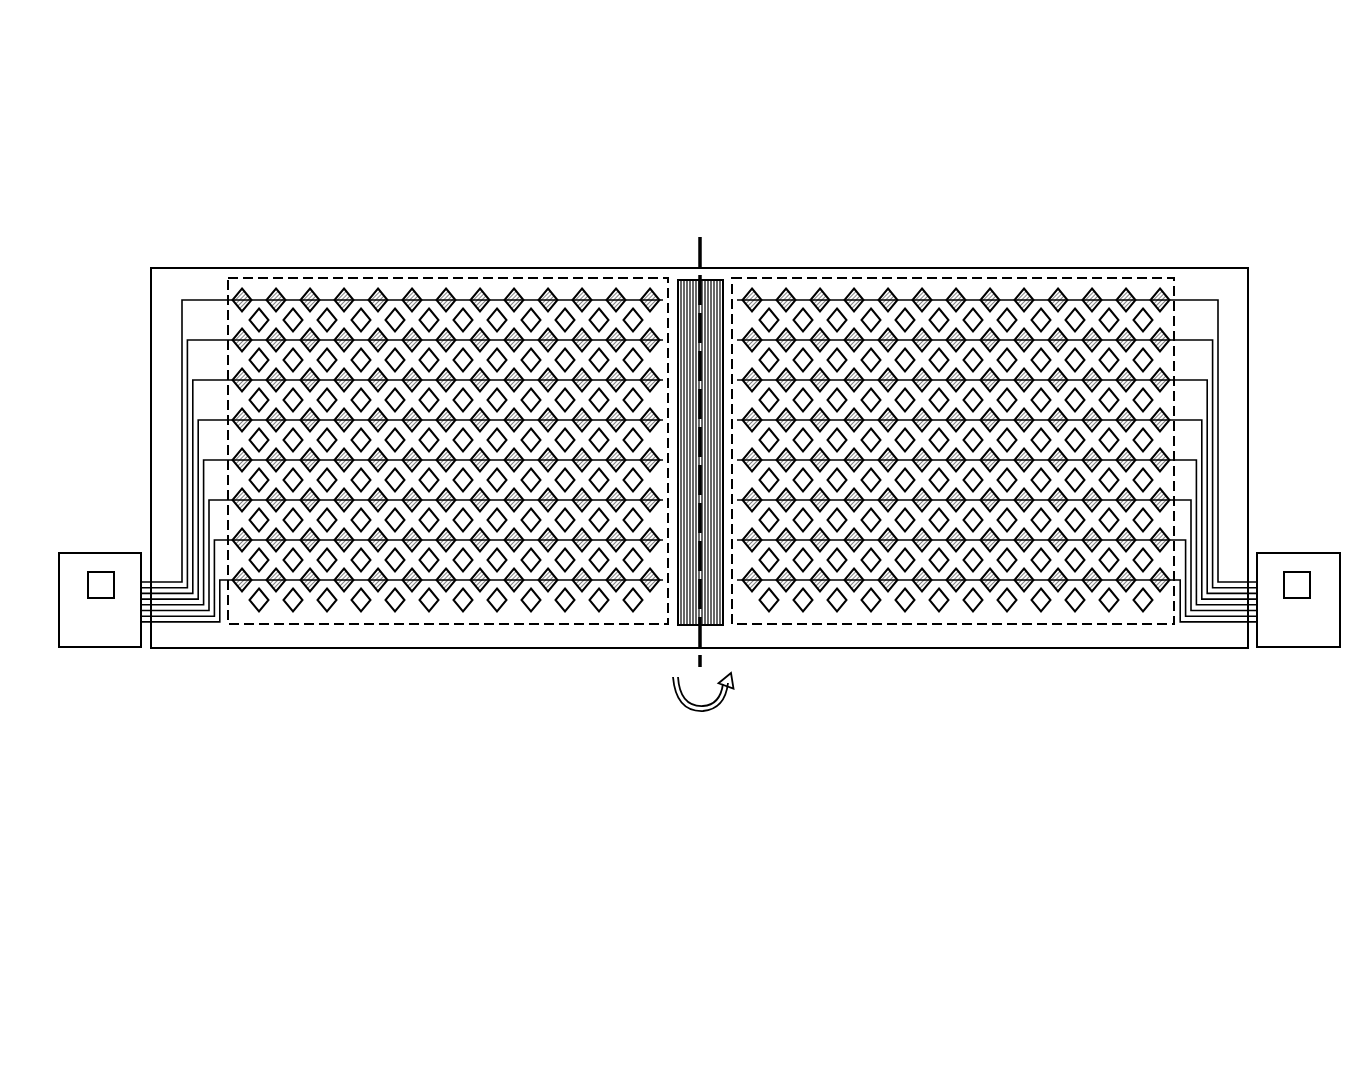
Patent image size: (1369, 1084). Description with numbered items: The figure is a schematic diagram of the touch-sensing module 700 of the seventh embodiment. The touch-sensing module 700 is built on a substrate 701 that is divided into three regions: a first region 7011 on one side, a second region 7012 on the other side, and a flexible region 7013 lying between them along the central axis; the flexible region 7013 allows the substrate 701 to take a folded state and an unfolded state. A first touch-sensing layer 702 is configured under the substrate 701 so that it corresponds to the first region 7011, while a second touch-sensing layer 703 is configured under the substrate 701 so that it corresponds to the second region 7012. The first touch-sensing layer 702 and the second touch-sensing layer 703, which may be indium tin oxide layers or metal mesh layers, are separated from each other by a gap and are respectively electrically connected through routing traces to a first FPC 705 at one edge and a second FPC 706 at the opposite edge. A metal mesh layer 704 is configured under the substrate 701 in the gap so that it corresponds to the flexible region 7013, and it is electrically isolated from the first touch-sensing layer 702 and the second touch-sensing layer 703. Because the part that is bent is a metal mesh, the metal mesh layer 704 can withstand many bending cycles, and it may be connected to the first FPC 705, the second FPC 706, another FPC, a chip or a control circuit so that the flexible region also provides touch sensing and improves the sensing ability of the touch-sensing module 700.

The touch-sensing module 700 is at (964, 743).
The substrate 701 is at (200, 282).
The first region 7011 is at (662, 255).
The second region 7012 is at (1173, 255).
The flexible region 7013 is at (721, 227).
The first touch-sensing layer 702 is at (447, 625).
The second touch-sensing layer 703 is at (1018, 625).
The metal mesh layer 704 is at (713, 625).
The first FPC 705 is at (102, 632).
The second FPC 706 is at (1292, 632).